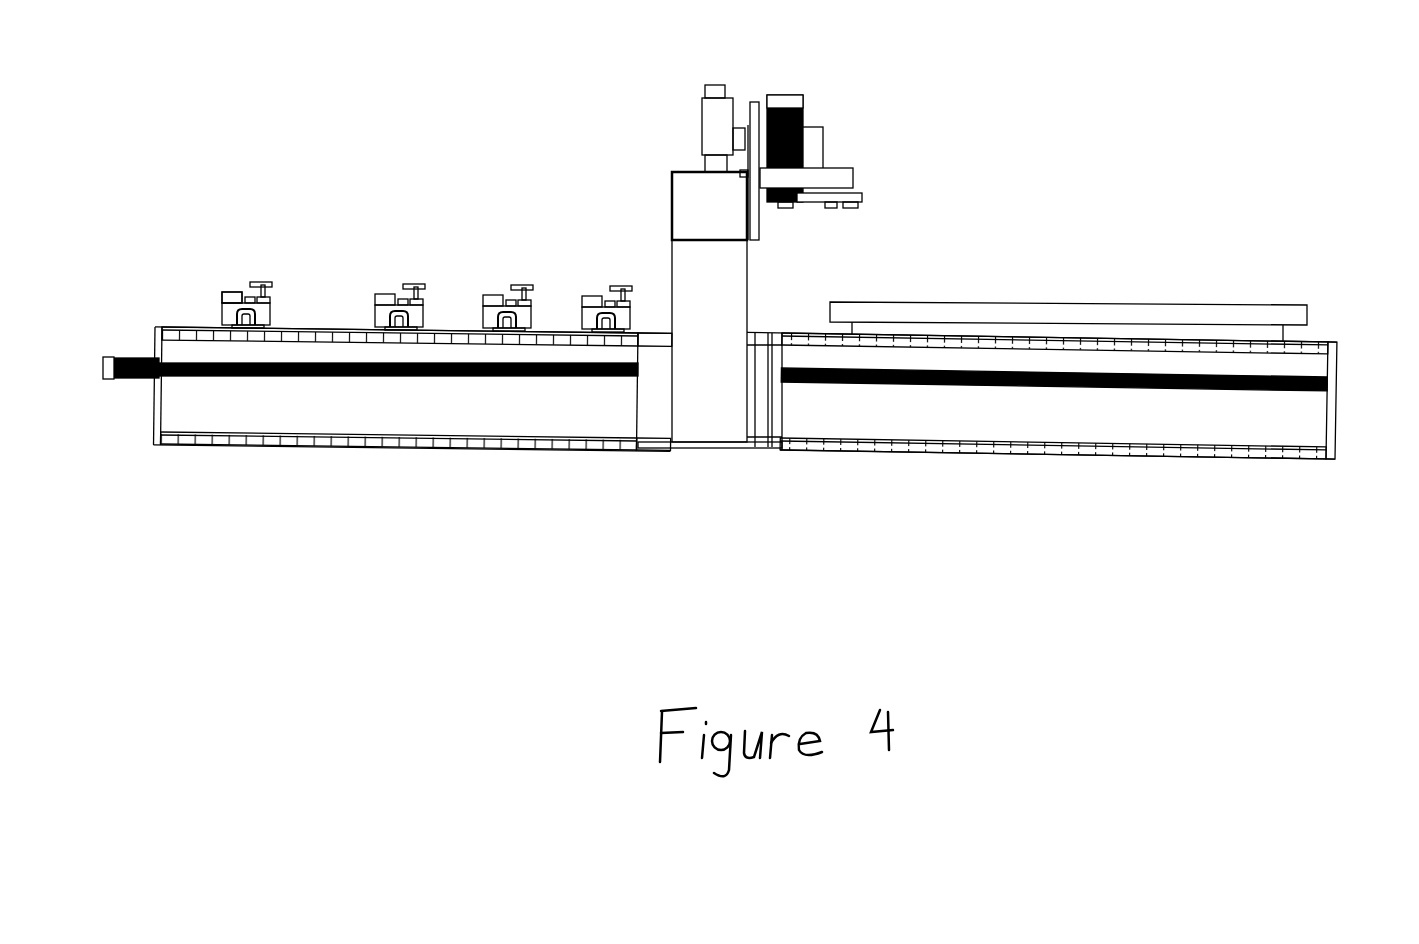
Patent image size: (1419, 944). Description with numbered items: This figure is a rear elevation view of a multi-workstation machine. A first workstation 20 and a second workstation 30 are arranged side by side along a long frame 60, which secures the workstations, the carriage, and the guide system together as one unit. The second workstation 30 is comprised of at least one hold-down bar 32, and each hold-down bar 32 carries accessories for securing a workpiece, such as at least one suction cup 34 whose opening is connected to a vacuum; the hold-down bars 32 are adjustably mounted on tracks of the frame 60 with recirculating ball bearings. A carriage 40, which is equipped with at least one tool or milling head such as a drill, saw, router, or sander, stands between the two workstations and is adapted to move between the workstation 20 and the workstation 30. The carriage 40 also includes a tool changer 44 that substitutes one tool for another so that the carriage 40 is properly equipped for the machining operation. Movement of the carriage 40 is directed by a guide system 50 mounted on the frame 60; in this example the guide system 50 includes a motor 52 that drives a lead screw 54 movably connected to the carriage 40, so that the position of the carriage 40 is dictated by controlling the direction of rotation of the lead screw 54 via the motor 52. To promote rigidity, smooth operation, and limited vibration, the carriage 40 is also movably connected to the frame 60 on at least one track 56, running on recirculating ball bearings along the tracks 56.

The first workstation 20 is at (1172, 303).
The second workstation 30 is at (412, 270).
The hold-down bar 32 is at (222, 313).
The suction cup 34 is at (223, 302).
The carriage 40 is at (666, 208).
The tool changer 44 is at (867, 195).
The guide system 50 is at (128, 388).
The motor 52 is at (110, 357).
The lead screw 54 is at (410, 377).
The track 56 is at (278, 342).
The frame 60 is at (1337, 398).